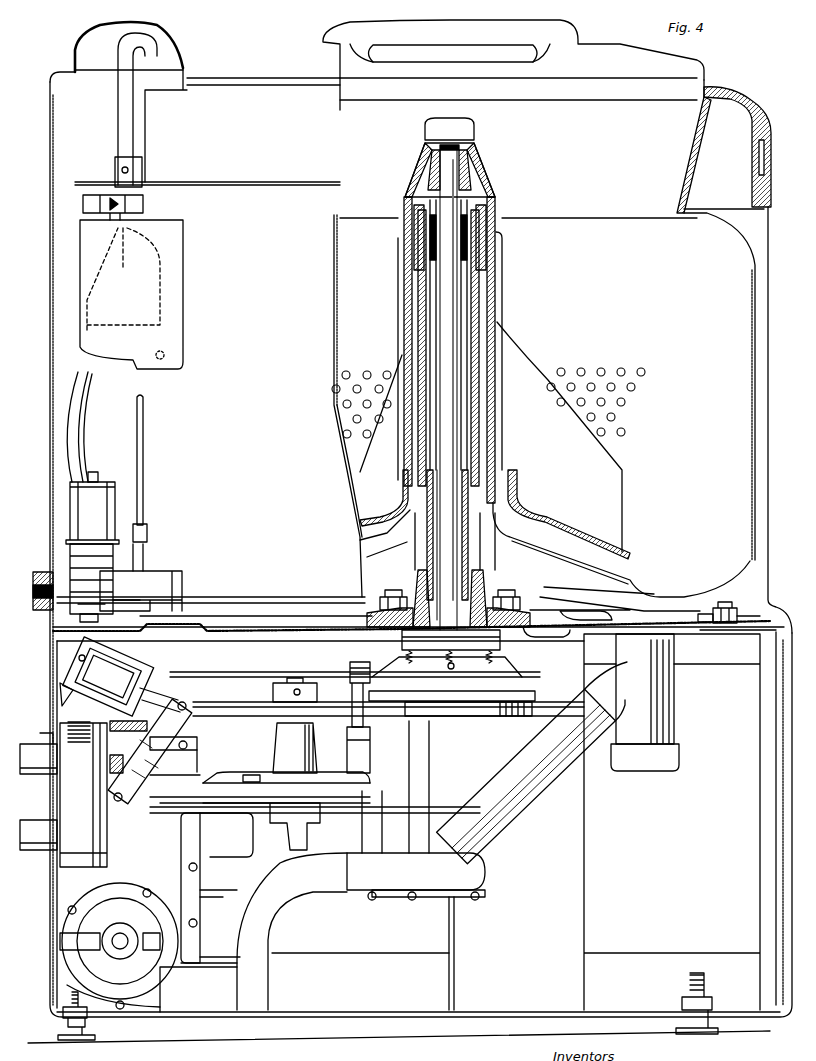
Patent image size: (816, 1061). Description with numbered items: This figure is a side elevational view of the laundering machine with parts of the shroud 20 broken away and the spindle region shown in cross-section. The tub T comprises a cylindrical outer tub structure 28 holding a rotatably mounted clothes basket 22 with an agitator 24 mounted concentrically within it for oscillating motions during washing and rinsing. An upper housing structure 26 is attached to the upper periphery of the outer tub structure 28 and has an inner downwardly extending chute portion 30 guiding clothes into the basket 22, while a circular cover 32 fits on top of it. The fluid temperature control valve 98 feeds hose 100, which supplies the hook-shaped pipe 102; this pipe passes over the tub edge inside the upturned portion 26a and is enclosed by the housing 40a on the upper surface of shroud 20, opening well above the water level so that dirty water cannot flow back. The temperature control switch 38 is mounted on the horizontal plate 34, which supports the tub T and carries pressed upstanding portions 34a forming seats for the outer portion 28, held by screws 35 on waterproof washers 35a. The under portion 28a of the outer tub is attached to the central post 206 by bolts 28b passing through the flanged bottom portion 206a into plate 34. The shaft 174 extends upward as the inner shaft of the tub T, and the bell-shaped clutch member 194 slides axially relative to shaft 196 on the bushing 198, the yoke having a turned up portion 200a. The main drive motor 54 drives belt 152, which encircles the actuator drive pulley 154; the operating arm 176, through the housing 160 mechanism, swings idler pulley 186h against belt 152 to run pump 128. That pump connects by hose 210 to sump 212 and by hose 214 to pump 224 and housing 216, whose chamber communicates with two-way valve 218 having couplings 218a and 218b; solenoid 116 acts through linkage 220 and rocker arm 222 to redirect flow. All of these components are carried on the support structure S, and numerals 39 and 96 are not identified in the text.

The shroud 20 is at (49, 112).
The housing 40a is at (100, 26).
The hook-shaped pipe 102 is at (122, 58).
The upturned portion 26a is at (163, 95).
The lid 39 is at (343, 42).
The cover 32 is at (644, 50).
The upper housing structure 26 is at (751, 113).
The chute portion 30 is at (680, 172).
The operating arm 176 is at (470, 172).
The tub T is at (768, 332).
The outer tub structure 28 is at (768, 385).
The basket 22 is at (753, 462).
The agitator 24 is at (536, 345).
The shaft 196 is at (469, 369).
The bushing 198 is at (485, 405).
The shaft 174 is at (450, 459).
The hose 100 is at (82, 435).
The control rod 96 is at (148, 450).
The fluid temperature control valve 98 is at (66, 566).
The temperature control switch 38 is at (165, 572).
The horizontal plate 34 is at (123, 630).
The upstanding portions 34a is at (192, 625).
The screws 35 is at (735, 606).
The waterproof washers 35a is at (710, 612).
The central post 206 is at (410, 568).
The bolts 28b is at (515, 600).
The flanged bottom portion 206a is at (530, 604).
The under portion 28a is at (560, 604).
The turned up portion 200a is at (505, 675).
The clutch member 194 is at (419, 690).
The solenoid 116 is at (107, 676).
The linkage 220 is at (183, 700).
The belt 152 is at (199, 706).
The actuator drive pulley 154 is at (252, 702).
The main drive motor 54 is at (203, 773).
The housing 160 is at (238, 772).
The rocker arm 222 is at (133, 790).
The two-way valve 218 is at (80, 784).
The hose coupling 218a is at (52, 852).
The hose coupling 218b is at (50, 745).
The pump 224 is at (120, 900).
The housing 216 is at (160, 912).
The hose 214 is at (275, 920).
The pump 128 is at (470, 855).
The hose 210 is at (520, 830).
The sump 212 is at (667, 700).
The idler pulley 186h is at (600, 720).
The support structure S is at (372, 940).